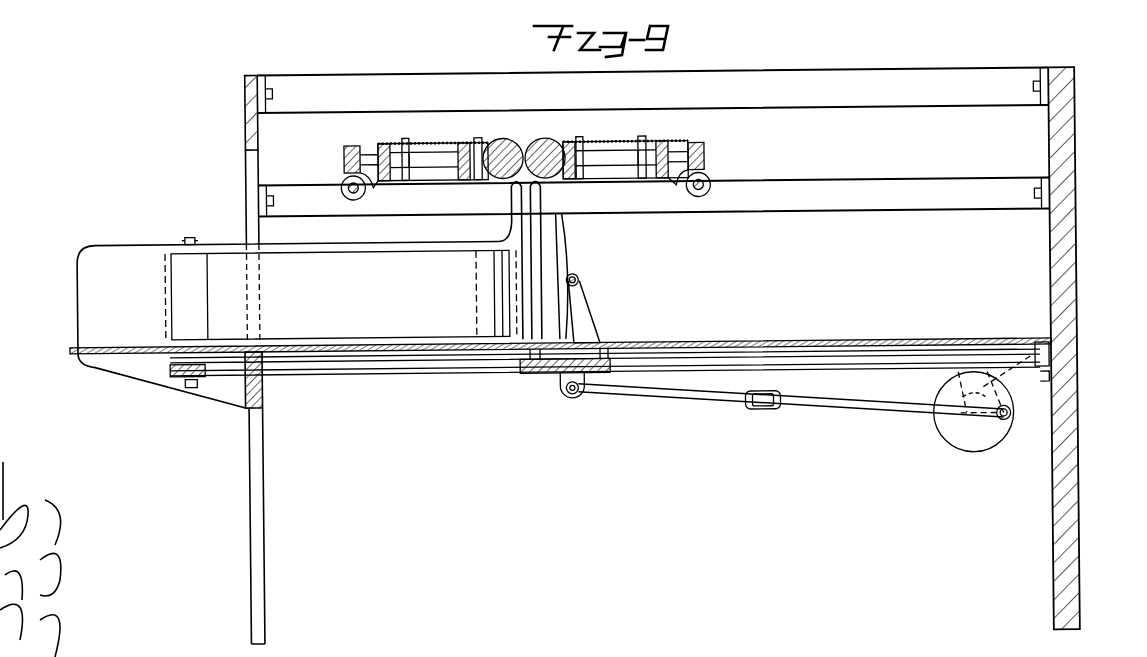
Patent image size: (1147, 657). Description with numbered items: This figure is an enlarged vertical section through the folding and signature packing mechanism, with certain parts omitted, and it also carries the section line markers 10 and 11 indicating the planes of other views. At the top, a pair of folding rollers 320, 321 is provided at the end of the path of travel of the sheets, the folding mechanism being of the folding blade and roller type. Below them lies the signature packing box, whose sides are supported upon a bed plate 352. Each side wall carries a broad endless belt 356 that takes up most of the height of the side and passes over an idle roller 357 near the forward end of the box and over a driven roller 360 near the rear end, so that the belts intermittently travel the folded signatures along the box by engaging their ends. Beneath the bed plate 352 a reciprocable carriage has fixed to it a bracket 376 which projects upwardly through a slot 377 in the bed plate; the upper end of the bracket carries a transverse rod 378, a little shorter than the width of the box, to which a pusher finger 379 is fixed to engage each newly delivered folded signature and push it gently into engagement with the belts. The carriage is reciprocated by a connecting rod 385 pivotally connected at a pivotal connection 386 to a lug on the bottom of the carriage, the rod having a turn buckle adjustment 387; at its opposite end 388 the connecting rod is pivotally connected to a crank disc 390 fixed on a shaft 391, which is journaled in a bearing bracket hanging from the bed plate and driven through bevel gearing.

The section line 10- 10 is at (28, 242).
The section line 11- 11 is at (215, 208).
The folding roller 320 is at (505, 138).
The folding roller 321 is at (555, 138).
The bed plate 352 is at (770, 342).
The endless belt 356 is at (289, 322).
The idle roller 357 is at (490, 343).
The driven roller 360 is at (185, 296).
The bracket 376 is at (583, 308).
The slot 377 is at (603, 343).
The rod 378 is at (581, 279).
The pusher finger 379 is at (568, 252).
The connecting rod 385 is at (604, 398).
The pivotal connection 386 is at (565, 392).
The turn buckle adjustment 387 is at (772, 410).
The opposite end of connecting rod 388 is at (1007, 425).
The crank disc 390 is at (956, 446).
The shaft 391 is at (932, 432).